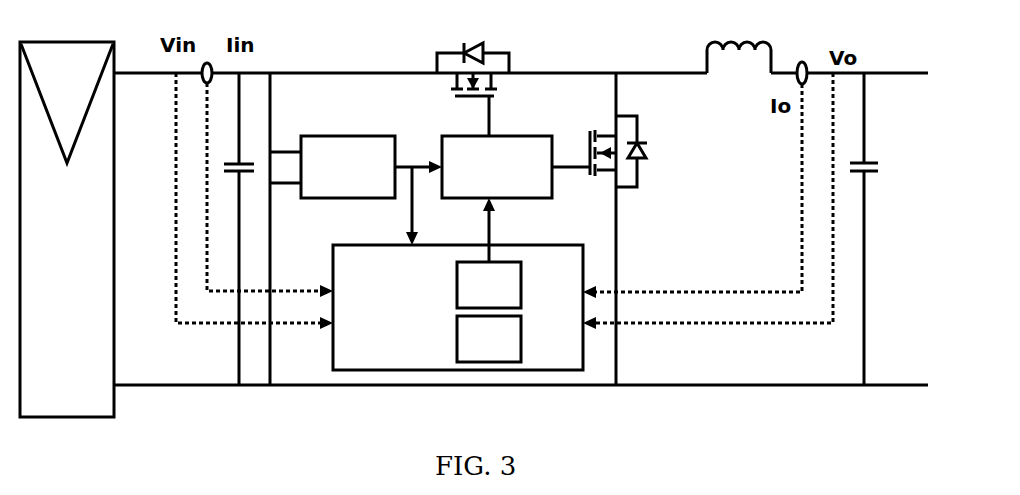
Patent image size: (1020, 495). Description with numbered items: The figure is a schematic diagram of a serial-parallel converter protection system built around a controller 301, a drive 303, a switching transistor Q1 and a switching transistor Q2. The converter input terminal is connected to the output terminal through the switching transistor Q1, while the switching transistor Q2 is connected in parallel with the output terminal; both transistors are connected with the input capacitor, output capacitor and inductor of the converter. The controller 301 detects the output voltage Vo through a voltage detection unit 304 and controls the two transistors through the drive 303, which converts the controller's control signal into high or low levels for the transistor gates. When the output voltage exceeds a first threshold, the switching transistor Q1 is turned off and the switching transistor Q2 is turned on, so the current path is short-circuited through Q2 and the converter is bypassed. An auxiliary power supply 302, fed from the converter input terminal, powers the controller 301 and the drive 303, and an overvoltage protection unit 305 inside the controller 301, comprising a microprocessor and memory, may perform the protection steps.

The controller 301 is at (458, 307).
The auxiliary power supply 302 is at (348, 167).
The drive 303 is at (497, 167).
The voltage detection unit 304 is at (489, 339).
The overvoltage protection unit 305 is at (489, 285).
The switching transistor Q1 is at (485, 89).
The switching transistor Q2 is at (599, 229).